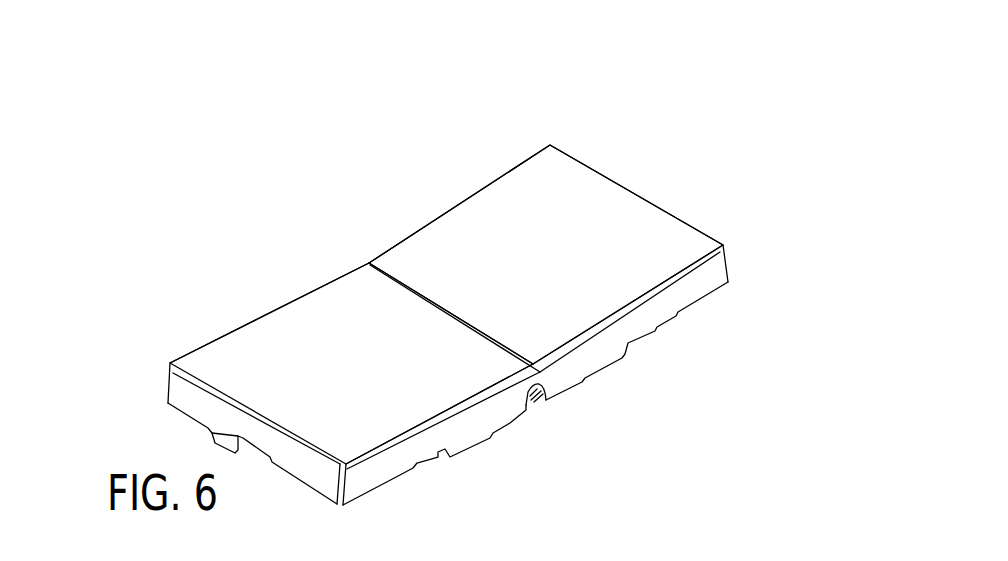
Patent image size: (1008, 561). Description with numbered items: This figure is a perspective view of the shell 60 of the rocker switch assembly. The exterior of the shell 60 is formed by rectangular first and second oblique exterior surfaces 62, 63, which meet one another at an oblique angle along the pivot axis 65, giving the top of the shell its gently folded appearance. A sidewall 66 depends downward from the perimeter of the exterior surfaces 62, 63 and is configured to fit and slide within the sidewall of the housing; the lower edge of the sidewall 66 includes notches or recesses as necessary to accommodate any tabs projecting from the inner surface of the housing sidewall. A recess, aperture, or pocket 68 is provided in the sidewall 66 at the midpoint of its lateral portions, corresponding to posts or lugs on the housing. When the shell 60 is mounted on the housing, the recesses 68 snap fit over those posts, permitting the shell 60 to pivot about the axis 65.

The shell 60 is at (258, 222).
The first oblique exterior surface 62 is at (587, 217).
The second oblique exterior surface 63 is at (290, 363).
The pivot axis 65 is at (370, 262).
The sidewall 66 is at (678, 293).
The recess 68 is at (542, 400).